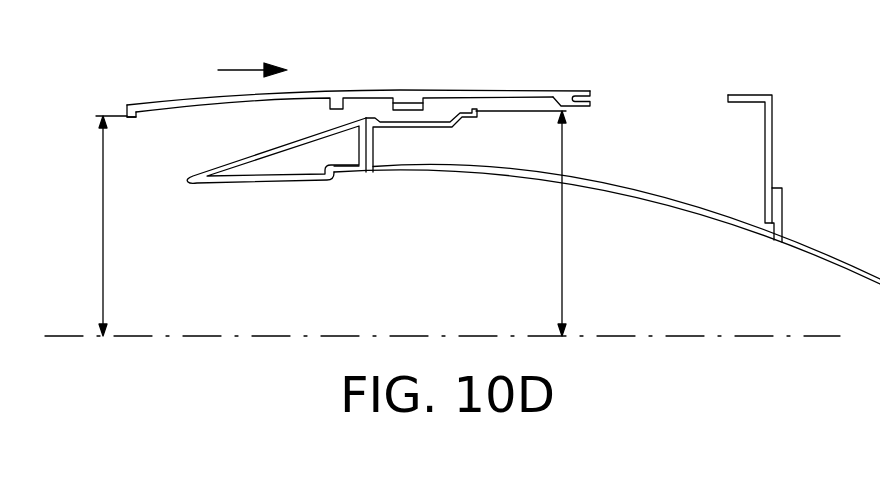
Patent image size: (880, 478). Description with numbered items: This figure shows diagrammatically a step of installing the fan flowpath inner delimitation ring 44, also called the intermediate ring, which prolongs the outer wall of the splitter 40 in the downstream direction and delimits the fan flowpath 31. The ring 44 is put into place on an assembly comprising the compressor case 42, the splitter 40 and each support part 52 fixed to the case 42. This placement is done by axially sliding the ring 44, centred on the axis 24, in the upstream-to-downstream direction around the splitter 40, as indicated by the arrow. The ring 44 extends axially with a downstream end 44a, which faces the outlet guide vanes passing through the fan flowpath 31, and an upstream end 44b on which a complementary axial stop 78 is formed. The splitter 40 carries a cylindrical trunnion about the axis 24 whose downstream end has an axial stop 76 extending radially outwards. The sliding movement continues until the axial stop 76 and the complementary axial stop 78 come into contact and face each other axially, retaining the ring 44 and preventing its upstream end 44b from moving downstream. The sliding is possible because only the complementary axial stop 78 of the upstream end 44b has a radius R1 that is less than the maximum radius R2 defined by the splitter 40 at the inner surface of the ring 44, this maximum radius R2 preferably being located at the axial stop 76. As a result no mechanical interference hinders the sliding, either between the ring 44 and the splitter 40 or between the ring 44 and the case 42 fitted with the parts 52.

The fan flowpath 31 is at (472, 70).
The fan flowpath inner delimitation ring 44 is at (341, 88).
The downstream end 44a is at (566, 88).
The upstream end 44b is at (131, 104).
The splitter 40 is at (281, 166).
The axial stop 76 is at (478, 114).
The compressor case 42 is at (540, 190).
The support part 52 is at (779, 153).
The complementary axial stop 78 is at (139, 118).
The radius R1 is at (104, 228).
The maximum radius R2 is at (563, 224).
The axis 24 is at (763, 334).